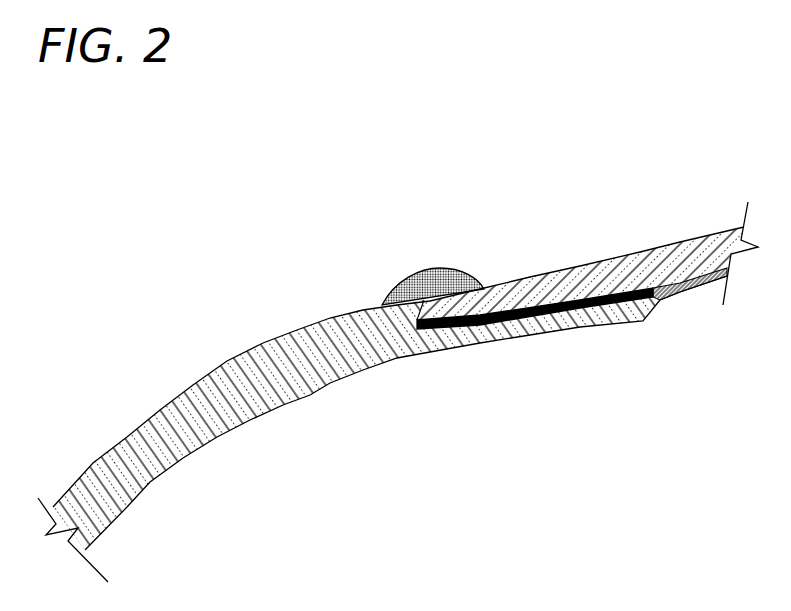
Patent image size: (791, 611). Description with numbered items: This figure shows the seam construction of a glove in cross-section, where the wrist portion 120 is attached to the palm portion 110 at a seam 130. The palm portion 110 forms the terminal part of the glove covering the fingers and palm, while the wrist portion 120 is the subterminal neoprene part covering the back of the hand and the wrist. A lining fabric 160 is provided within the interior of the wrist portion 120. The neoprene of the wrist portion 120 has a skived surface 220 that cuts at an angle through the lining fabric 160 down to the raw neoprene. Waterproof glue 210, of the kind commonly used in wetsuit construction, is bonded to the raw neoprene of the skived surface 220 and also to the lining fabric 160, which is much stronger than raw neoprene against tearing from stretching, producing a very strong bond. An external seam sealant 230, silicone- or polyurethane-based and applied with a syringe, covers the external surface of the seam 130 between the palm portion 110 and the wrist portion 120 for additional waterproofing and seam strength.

The palm portion 110 is at (234, 355).
The wrist portion 120 is at (690, 231).
The seam 130 is at (424, 300).
The lining fabric 160 is at (694, 291).
The waterproof glue 210 is at (593, 318).
The skived surface 220 is at (507, 300).
The external seam sealant 230 is at (438, 264).